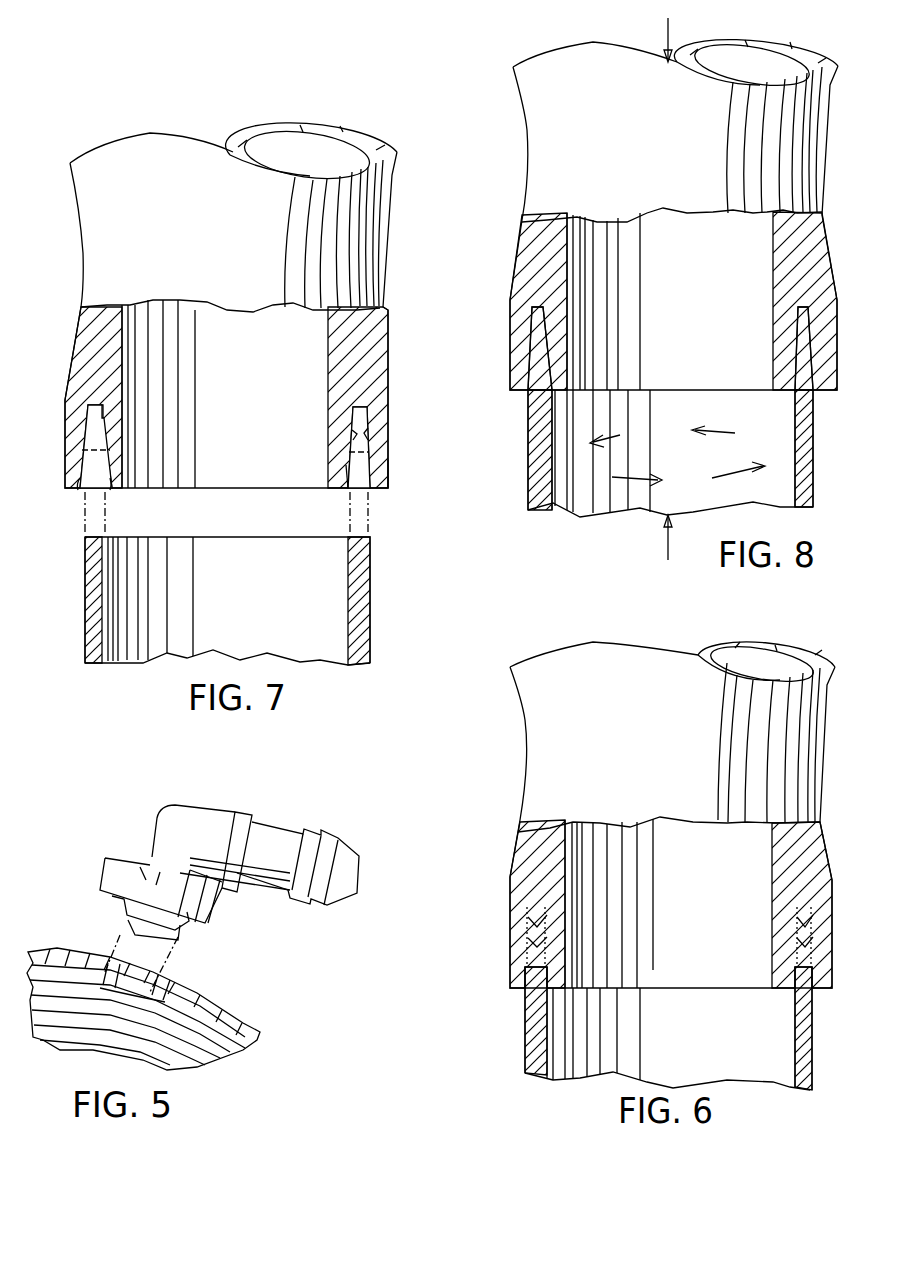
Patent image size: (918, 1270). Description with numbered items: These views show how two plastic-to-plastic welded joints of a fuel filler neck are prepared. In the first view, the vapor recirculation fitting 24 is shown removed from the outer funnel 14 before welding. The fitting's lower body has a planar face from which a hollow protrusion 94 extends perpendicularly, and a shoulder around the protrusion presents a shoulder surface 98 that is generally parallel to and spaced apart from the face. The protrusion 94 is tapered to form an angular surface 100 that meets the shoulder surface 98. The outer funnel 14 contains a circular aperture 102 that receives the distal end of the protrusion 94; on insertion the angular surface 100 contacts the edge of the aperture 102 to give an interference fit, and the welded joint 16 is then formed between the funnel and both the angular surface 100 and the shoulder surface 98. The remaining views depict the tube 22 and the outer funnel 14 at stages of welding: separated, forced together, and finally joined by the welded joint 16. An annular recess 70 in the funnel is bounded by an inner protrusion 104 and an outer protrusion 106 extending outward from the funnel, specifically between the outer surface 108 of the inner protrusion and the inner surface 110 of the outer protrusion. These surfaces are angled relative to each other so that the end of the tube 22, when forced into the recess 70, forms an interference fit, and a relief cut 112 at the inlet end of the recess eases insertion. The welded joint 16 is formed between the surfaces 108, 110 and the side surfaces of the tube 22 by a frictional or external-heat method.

In FIG. 7, the outer funnel 14 is at (108, 270).
In FIG. 8, the outer funnel 14 is at (542, 177).
In FIG. 6, the outer funnel 14 is at (538, 768).
In FIG. 5, the outer funnel 14 is at (250, 1006).
In FIG. 6, the welded joint 16 is at (813, 932).
In FIG. 7, the tube 22 is at (368, 603).
In FIG. 8, the tube 22 is at (807, 464).
In FIG. 6, the tube 22 is at (525, 1048).
In FIG. 5, the vapor recirculation fitting 24 is at (222, 797).
In FIG. 7, the annular recess 70 is at (96, 420).
In FIG. 8, the annular recess 70 is at (536, 315).
In FIG. 5, the hollow protrusion 94 is at (128, 937).
In FIG. 5, the shoulder surface 98 is at (110, 899).
In FIG. 5, the angular surface 100 is at (187, 928).
In FIG. 5, the circular aperture 102 is at (157, 981).
In FIG. 7, the inner protrusion 104 is at (332, 472).
In FIG. 7, the outer protrusion 106 is at (390, 472).
In FIG. 7, the outer surface of the inner protrusion 108 is at (352, 431).
In FIG. 7, the inner surface of the outer protrusion 110 is at (373, 431).
In FIG. 7, the relief cut 112 is at (82, 492).